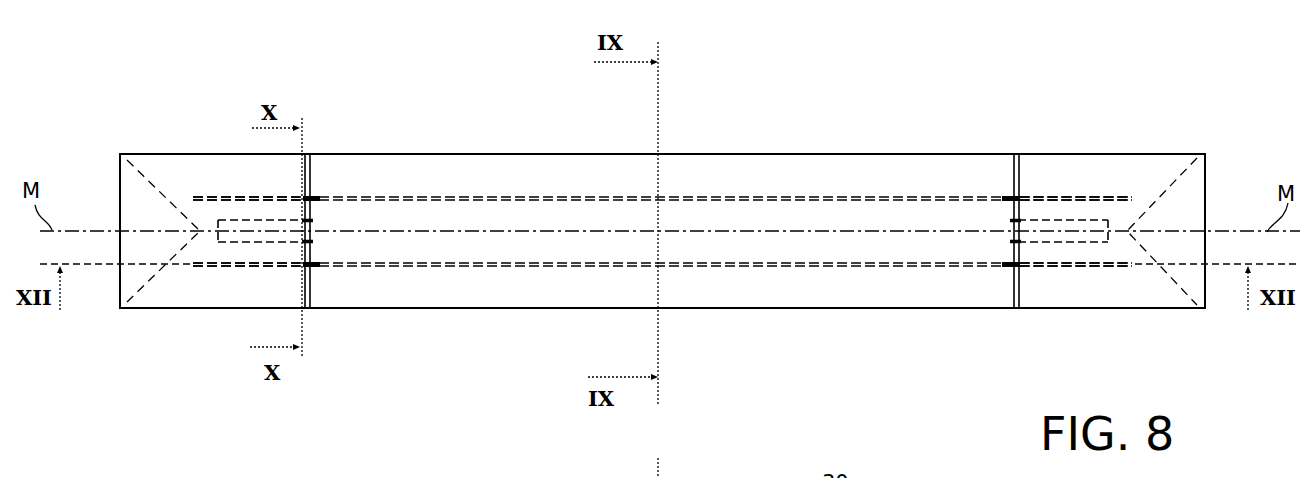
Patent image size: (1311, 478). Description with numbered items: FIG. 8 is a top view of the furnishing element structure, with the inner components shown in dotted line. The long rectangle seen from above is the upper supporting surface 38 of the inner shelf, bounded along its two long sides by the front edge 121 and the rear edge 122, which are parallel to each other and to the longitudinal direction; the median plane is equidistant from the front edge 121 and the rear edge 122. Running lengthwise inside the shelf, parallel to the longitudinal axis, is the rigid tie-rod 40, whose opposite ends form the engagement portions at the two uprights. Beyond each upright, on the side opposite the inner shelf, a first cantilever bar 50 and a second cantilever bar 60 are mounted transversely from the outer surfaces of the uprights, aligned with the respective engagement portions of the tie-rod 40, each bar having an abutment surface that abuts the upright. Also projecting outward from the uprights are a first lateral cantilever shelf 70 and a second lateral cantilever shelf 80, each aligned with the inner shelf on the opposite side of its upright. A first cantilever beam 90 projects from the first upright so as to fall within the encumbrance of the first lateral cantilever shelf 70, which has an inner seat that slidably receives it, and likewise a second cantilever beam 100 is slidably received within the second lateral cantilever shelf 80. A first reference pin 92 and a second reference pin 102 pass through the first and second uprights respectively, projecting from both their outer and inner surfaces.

The upper supporting surface 38 is at (823, 170).
The rigid tie-rod 40 is at (733, 194).
The first cantilever bar 50 is at (230, 194).
The second cantilever bar 60 is at (1098, 197).
The first lateral cantilever shelf 70 is at (140, 200).
The second lateral cantilever shelf 80 is at (1190, 188).
The first cantilever beam 90 is at (265, 217).
The first reference pin 92 is at (313, 177).
The second cantilever beam 100 is at (1050, 223).
The second reference pin 102 is at (1012, 180).
The front edge 121 is at (477, 309).
The rear edge 122 is at (457, 153).